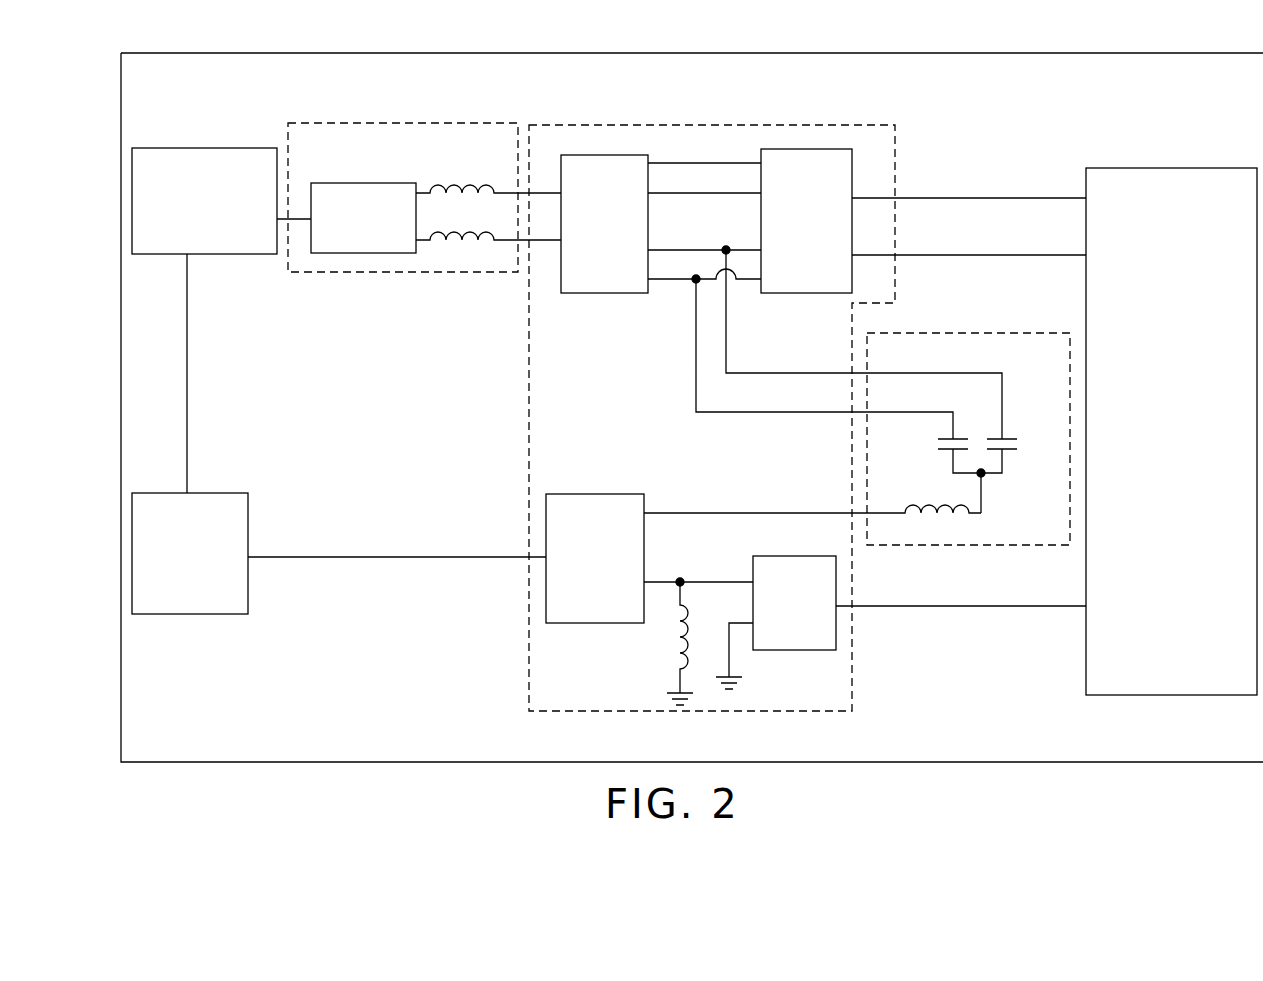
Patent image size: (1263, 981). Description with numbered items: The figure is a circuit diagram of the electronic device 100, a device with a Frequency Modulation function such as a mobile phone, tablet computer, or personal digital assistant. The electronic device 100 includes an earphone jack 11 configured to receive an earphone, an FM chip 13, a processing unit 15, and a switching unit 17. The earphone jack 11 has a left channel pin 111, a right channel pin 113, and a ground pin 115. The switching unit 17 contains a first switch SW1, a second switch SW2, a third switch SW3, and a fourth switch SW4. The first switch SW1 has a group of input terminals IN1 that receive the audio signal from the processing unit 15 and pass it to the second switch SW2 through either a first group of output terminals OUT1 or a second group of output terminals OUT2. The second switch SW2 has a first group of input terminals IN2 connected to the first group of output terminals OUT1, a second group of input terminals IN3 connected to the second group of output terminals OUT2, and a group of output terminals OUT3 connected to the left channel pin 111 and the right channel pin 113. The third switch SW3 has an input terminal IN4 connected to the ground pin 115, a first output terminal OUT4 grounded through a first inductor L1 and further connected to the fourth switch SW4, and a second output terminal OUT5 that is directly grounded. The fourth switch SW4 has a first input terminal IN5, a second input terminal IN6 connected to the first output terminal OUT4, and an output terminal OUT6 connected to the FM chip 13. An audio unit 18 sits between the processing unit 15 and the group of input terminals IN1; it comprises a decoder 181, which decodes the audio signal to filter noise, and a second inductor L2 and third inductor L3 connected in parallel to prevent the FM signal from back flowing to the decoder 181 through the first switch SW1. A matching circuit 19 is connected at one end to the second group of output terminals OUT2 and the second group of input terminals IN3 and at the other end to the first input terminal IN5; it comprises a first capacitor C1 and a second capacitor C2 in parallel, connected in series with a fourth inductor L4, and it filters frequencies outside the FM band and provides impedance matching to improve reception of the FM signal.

The electronic device 100 is at (225, 28).
The earphone jack 11 is at (1170, 168).
The left channel pin 111 is at (1086, 198).
The right channel pin 113 is at (1086, 255).
The ground pin 115 is at (1086, 606).
The FM chip 13 is at (221, 493).
The processing unit 15 is at (190, 148).
The switching unit 17 is at (529, 693).
The audio unit 18 is at (452, 123).
The decoder 181 is at (356, 183).
The matching circuit 19 is at (857, 397).
The first switch SW1 is at (577, 155).
The second switch SW2 is at (834, 149).
The third switch SW3 is at (815, 650).
The fourth switch SW4 is at (590, 494).
The first inductor L1 is at (694, 643).
The second inductor L2 is at (488, 174).
The third inductor L3 is at (488, 220).
The fourth inductor L4 is at (812, 496).
The first capacitor C1 is at (937, 444).
The second capacitor C2 is at (1021, 444).
The group of input terminals IN1 is at (561, 241).
The first group of input terminals IN2 is at (760, 193).
The second group of input terminals IN3 is at (761, 279).
The input terminal IN4 is at (836, 604).
The first input terminal IN5 is at (645, 512).
The second input terminal IN6 is at (646, 585).
The first group of output terminals OUT1 is at (650, 193).
The second group of output terminals OUT2 is at (648, 279).
The group of output terminals OUT3 is at (852, 255).
The first output terminal OUT4 is at (753, 580).
The second output terminal OUT5 is at (755, 625).
The output terminal OUT6 is at (546, 556).